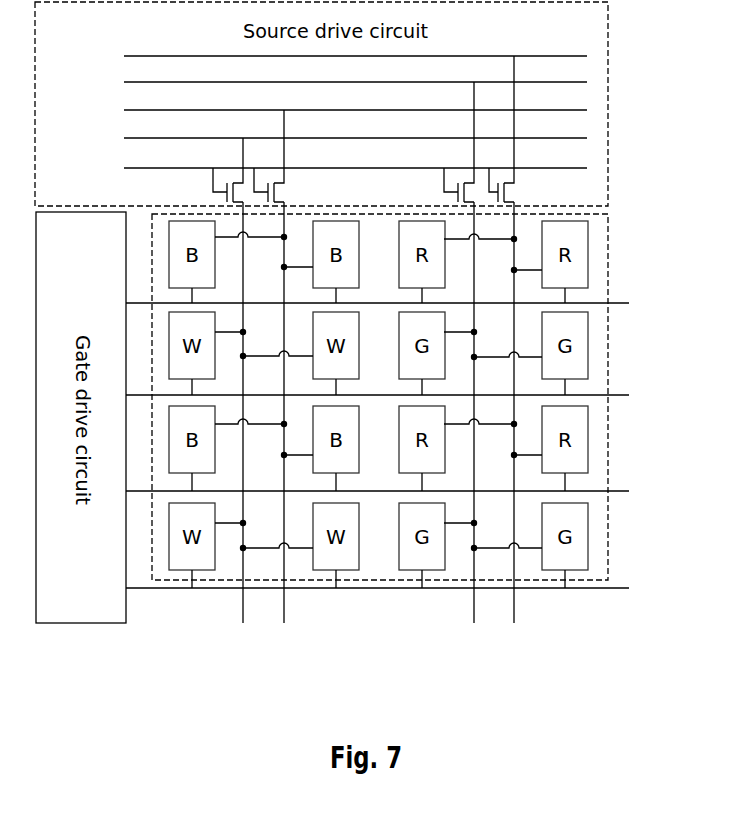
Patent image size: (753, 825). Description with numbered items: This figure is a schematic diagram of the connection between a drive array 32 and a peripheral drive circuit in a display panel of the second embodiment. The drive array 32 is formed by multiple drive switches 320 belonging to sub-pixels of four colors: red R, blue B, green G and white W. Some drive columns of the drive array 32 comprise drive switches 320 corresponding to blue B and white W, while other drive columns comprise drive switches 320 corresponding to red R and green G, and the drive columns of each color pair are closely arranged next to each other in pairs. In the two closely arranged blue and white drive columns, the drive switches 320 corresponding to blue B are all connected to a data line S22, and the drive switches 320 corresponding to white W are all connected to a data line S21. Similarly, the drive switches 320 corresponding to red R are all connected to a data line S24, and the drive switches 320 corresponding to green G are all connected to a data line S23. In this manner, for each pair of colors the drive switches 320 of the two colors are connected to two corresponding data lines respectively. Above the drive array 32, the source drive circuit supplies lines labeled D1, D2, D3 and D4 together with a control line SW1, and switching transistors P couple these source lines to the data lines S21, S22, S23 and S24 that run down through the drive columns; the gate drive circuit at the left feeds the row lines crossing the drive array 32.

The drive switch 320 is at (588, 270).
The drive array 32 is at (610, 361).
The switching transistor P is at (519, 194).
The data line S21 is at (243, 611).
The data line S22 is at (284, 614).
The data line S23 is at (470, 606).
The data line S24 is at (512, 611).
The data line D1 is at (334, 138).
The data line D2 is at (334, 110).
The data line D3 is at (334, 82).
The data line D4 is at (334, 56).
The switch control line SW1 is at (326, 168).